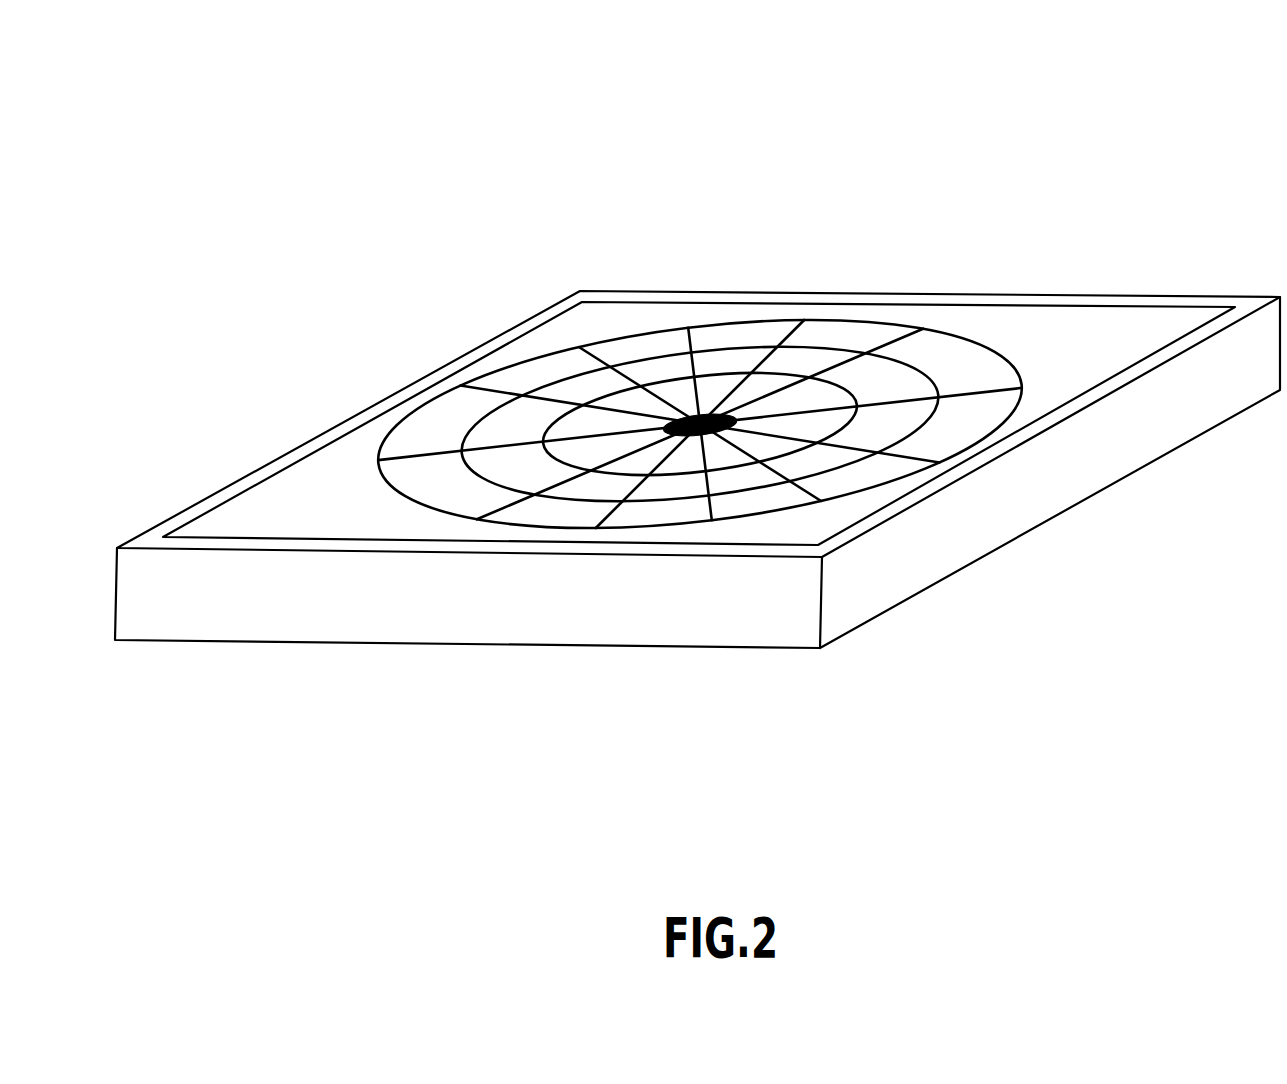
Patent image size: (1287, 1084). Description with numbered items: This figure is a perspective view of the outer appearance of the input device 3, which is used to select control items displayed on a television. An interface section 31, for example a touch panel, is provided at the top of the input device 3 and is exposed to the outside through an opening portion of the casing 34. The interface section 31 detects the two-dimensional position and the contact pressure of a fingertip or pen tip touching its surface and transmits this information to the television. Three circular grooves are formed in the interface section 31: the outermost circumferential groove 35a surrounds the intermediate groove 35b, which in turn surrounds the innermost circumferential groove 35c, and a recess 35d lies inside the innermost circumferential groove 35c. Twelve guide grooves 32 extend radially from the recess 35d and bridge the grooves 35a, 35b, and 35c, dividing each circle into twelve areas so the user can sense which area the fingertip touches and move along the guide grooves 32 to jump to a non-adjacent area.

The input device 3 is at (697, 372).
The interface section 31 is at (1058, 320).
The guide grooves 32 is at (955, 388).
The casing 34 is at (1240, 372).
The outermost circumferential groove 35a is at (852, 320).
The intermediate groove 35b is at (763, 353).
The innermost circumferential groove 35c is at (718, 383).
The recess 35d is at (690, 432).